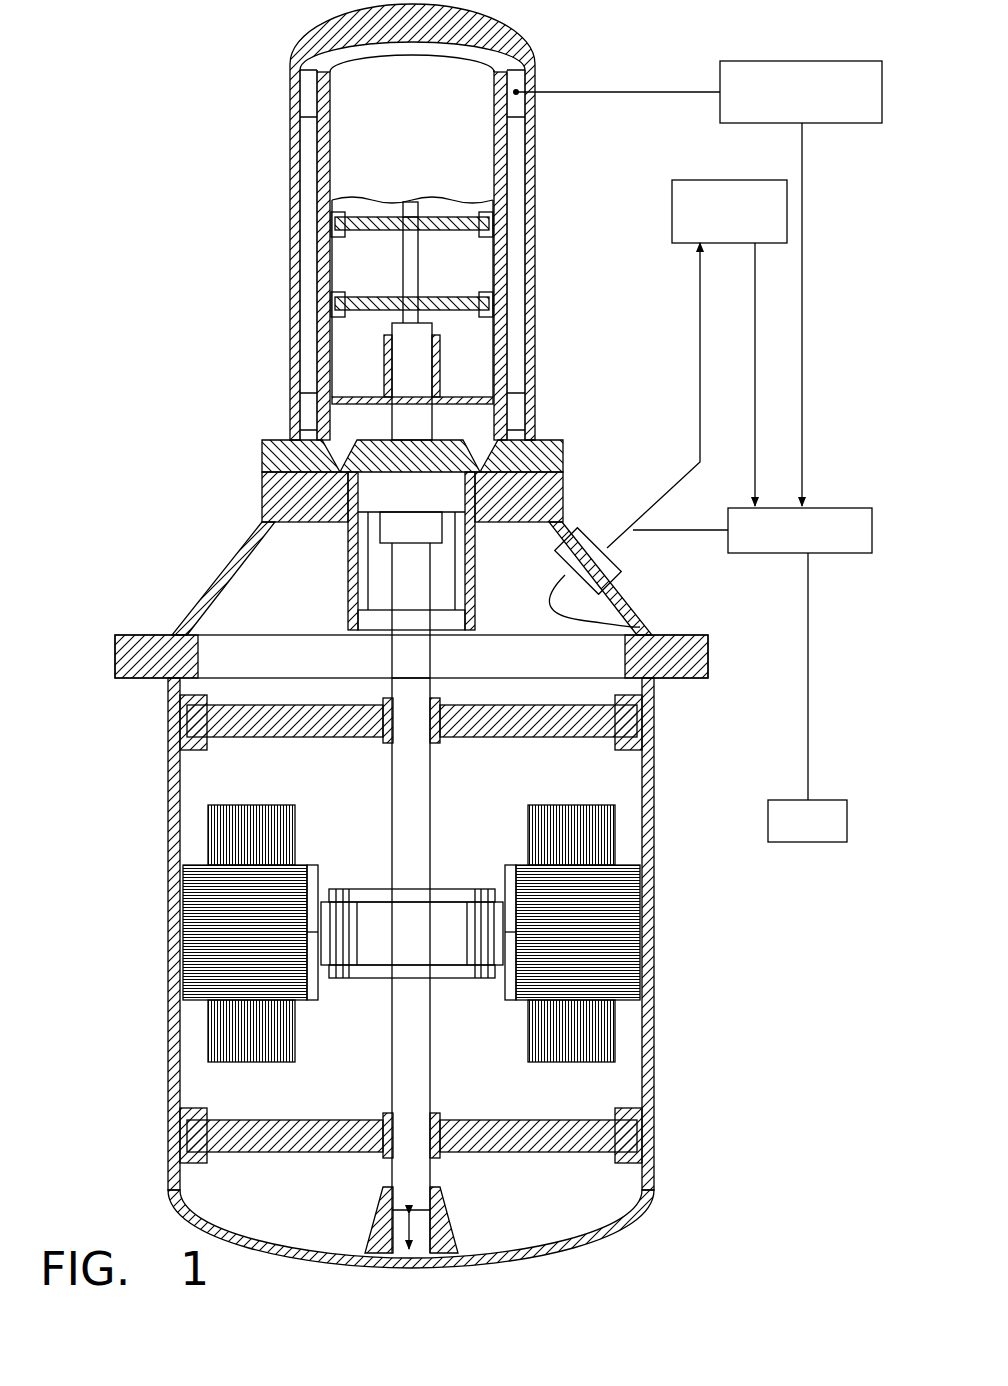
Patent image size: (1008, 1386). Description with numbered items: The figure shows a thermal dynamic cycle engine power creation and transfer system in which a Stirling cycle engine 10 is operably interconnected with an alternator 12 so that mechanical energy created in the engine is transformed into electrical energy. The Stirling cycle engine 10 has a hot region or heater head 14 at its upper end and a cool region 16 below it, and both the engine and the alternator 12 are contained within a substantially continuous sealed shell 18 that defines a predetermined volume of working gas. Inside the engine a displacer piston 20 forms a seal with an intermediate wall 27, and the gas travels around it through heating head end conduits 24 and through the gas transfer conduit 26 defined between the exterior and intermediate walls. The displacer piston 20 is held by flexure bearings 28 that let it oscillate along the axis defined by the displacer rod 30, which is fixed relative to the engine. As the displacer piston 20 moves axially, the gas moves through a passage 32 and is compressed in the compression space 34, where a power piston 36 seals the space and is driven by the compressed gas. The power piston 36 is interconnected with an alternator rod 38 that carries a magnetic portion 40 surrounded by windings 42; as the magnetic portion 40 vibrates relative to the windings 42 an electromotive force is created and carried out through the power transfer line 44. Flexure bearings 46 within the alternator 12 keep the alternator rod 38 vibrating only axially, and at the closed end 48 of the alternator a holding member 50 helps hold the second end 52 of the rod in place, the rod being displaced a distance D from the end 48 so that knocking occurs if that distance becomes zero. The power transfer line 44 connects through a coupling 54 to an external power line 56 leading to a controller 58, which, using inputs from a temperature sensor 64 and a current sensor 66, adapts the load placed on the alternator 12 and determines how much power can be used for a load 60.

The Stirling cycle engine 10 is at (407, 641).
The alternator 12 is at (386, 978).
The heater head 14 is at (305, 102).
The cool region 16 is at (304, 406).
The shell 18 is at (182, 593).
The displacer piston 20 is at (426, 165).
The heating head end conduits 24 is at (497, 98).
The gas transfer conduit 26 is at (301, 264).
The intermediate wall 27 is at (331, 214).
The flexure bearings 28 is at (436, 288).
The displacer rod 30 is at (420, 362).
The passage 32 is at (353, 450).
The compression space 34 is at (330, 477).
The power piston 36 is at (352, 566).
The alternator rod 38 is at (406, 654).
The magnetic portion 40 is at (426, 947).
The windings 42 is at (200, 946).
The power transfer line 44 is at (644, 768).
The flexure bearings 46 is at (258, 740).
The closed end 48 is at (525, 1262).
The holding member 50 is at (368, 1222).
The second end 52 is at (446, 1214).
The coupling 54 is at (613, 566).
The external power line 56 is at (702, 532).
The controller 58 is at (830, 554).
The load 60 is at (806, 843).
The temperature sensor 64 is at (735, 62).
The current sensor 66 is at (730, 180).
The distance D is at (395, 1235).